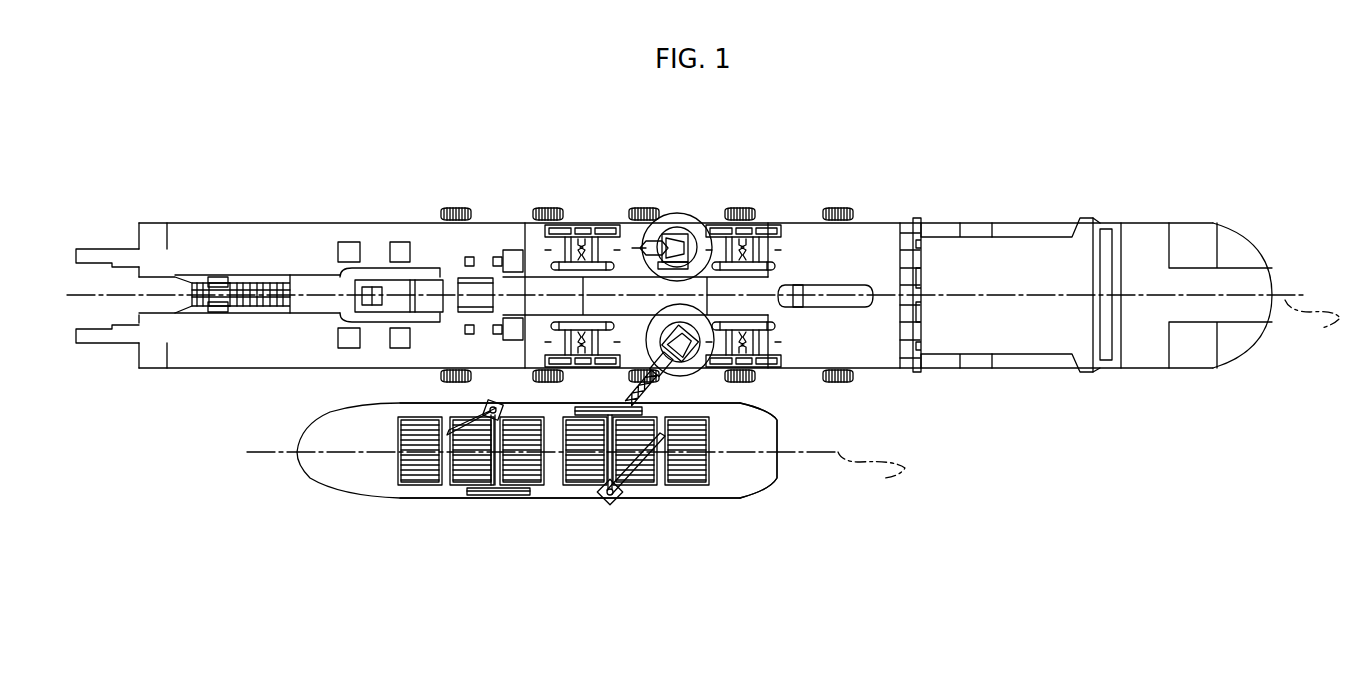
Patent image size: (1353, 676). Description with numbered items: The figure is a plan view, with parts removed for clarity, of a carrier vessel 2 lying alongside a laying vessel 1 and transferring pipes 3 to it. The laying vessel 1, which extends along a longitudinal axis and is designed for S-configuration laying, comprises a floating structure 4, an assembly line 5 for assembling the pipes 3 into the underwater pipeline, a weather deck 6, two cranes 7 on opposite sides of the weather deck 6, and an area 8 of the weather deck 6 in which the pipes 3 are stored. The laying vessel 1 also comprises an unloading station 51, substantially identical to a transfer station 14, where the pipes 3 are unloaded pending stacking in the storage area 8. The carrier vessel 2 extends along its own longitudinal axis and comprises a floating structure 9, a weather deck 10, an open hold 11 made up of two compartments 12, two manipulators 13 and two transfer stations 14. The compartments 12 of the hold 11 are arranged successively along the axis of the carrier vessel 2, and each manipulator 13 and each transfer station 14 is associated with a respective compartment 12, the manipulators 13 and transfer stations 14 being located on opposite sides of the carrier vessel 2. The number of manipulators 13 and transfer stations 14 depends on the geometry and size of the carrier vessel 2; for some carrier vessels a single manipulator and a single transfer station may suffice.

The laying vessel 1 is at (1150, 160).
The carrier vessel 2 is at (270, 406).
The pipes 3 is at (412, 478).
The floating structure 4 is at (983, 220).
The assembly line 5 is at (522, 286).
The weather deck 6 is at (833, 244).
The cranes 7 is at (692, 214).
The area 8 is at (845, 348).
The floating structure 9 is at (702, 472).
The weather deck 10 is at (752, 478).
The open hold 11 is at (572, 494).
The compartments 12 is at (372, 502).
The manipulators 13 is at (476, 390).
The transfer stations 14 is at (584, 405).
The unloading station 51 is at (754, 280).